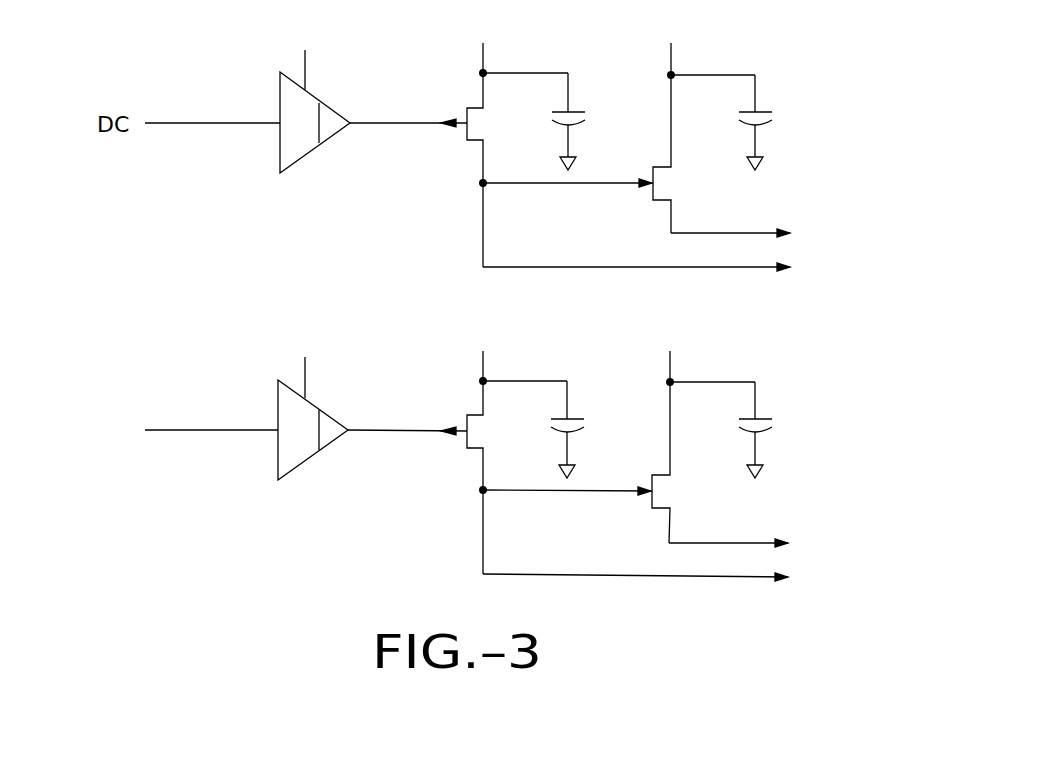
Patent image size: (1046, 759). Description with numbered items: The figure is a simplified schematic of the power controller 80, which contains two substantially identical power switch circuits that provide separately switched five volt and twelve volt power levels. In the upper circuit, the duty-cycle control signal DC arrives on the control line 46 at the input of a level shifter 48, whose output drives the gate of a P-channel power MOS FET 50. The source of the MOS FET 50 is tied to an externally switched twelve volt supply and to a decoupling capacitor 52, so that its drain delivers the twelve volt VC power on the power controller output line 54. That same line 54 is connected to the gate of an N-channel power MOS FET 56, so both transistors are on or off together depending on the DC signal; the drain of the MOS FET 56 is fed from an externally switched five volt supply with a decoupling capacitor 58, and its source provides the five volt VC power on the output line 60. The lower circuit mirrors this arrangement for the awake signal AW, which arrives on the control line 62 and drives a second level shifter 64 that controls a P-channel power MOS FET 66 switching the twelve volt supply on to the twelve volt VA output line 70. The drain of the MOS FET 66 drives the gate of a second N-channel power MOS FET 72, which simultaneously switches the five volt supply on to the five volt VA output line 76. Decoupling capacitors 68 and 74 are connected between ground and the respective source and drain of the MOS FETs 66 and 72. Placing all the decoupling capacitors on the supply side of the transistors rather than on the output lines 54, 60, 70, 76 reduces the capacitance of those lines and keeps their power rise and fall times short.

The control line 46 is at (218, 127).
The level shifter 48 is at (298, 160).
The P-channel power MOS FET 50 is at (462, 112).
The decoupling capacitor 52 is at (573, 108).
The power controller output line 54 is at (593, 267).
The N-channel power MOS FET 56 is at (648, 197).
The decoupling capacitor 58 is at (762, 112).
The power controller output line 60 is at (725, 233).
The AW input line 62 is at (218, 434).
The level shifter 64 is at (298, 467).
The P-channel power MOS FET 66 is at (462, 419).
The decoupling capacitor 68 is at (573, 415).
The power controller output line 70 is at (591, 574).
The N-channel power MOS FET 72 is at (648, 505).
The decoupling capacitor 74 is at (762, 419).
The power controller output line 76 is at (725, 543).
The power controller 80 is at (472, 474).